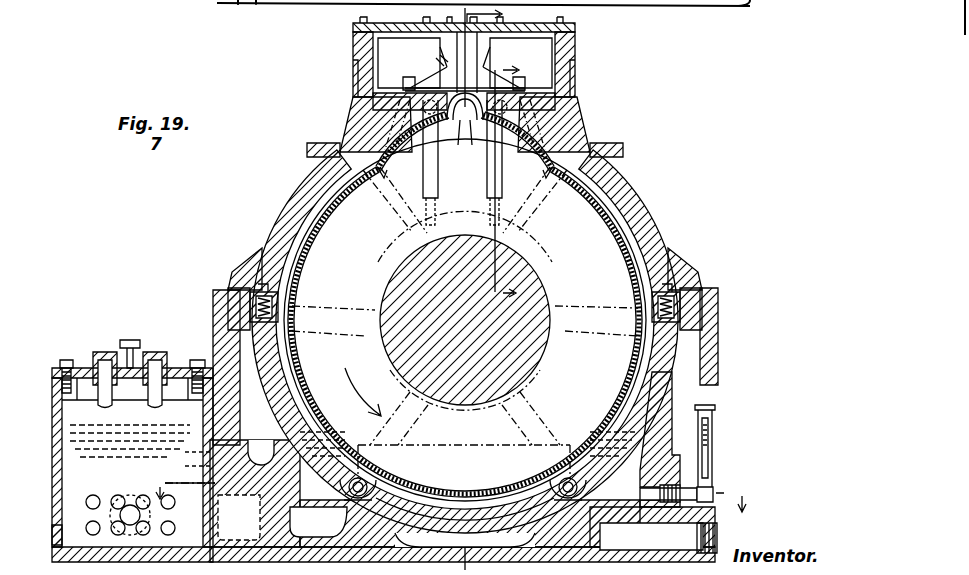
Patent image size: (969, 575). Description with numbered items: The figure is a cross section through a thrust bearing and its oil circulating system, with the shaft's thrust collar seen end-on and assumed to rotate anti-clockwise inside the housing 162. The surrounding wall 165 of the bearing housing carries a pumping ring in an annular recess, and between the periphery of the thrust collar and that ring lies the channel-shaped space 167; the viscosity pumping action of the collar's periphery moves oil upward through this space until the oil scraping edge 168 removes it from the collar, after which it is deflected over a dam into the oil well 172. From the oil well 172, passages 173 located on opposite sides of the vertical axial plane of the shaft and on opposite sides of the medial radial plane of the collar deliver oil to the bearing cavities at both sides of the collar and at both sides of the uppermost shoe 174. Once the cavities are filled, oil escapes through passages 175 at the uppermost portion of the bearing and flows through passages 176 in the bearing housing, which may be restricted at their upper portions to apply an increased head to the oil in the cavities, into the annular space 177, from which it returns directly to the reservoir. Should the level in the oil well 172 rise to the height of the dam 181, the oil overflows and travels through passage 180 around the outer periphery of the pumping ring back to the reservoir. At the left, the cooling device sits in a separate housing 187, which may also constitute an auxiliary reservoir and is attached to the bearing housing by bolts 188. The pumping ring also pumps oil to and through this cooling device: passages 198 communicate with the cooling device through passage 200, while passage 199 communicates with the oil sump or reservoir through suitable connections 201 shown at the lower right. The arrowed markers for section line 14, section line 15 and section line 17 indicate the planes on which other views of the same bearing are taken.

The section line 14 is at (498, 14).
The section line 15 is at (451, 490).
The section line 17 is at (521, 182).
The housing 162 is at (440, 80).
The surrounding wall 165 is at (640, 216).
The channel-shaped space 167 is at (633, 263).
The oil scraping edge 168 is at (462, 162).
The oil well 172 is at (540, 50).
The passages 173 is at (367, 107).
The uppermost shoe 174 is at (465, 310).
The passages 175 is at (378, 122).
The passages 176 is at (465, 322).
The annular space 177 is at (465, 320).
The passage 180 is at (300, 211).
The dam 181 is at (447, 60).
The separate housing 187 is at (205, 368).
The bolts 188 is at (210, 440).
The passages 198 is at (378, 490).
The passage 199 is at (465, 511).
The passage 200 is at (262, 490).
The connections 201 is at (585, 515).